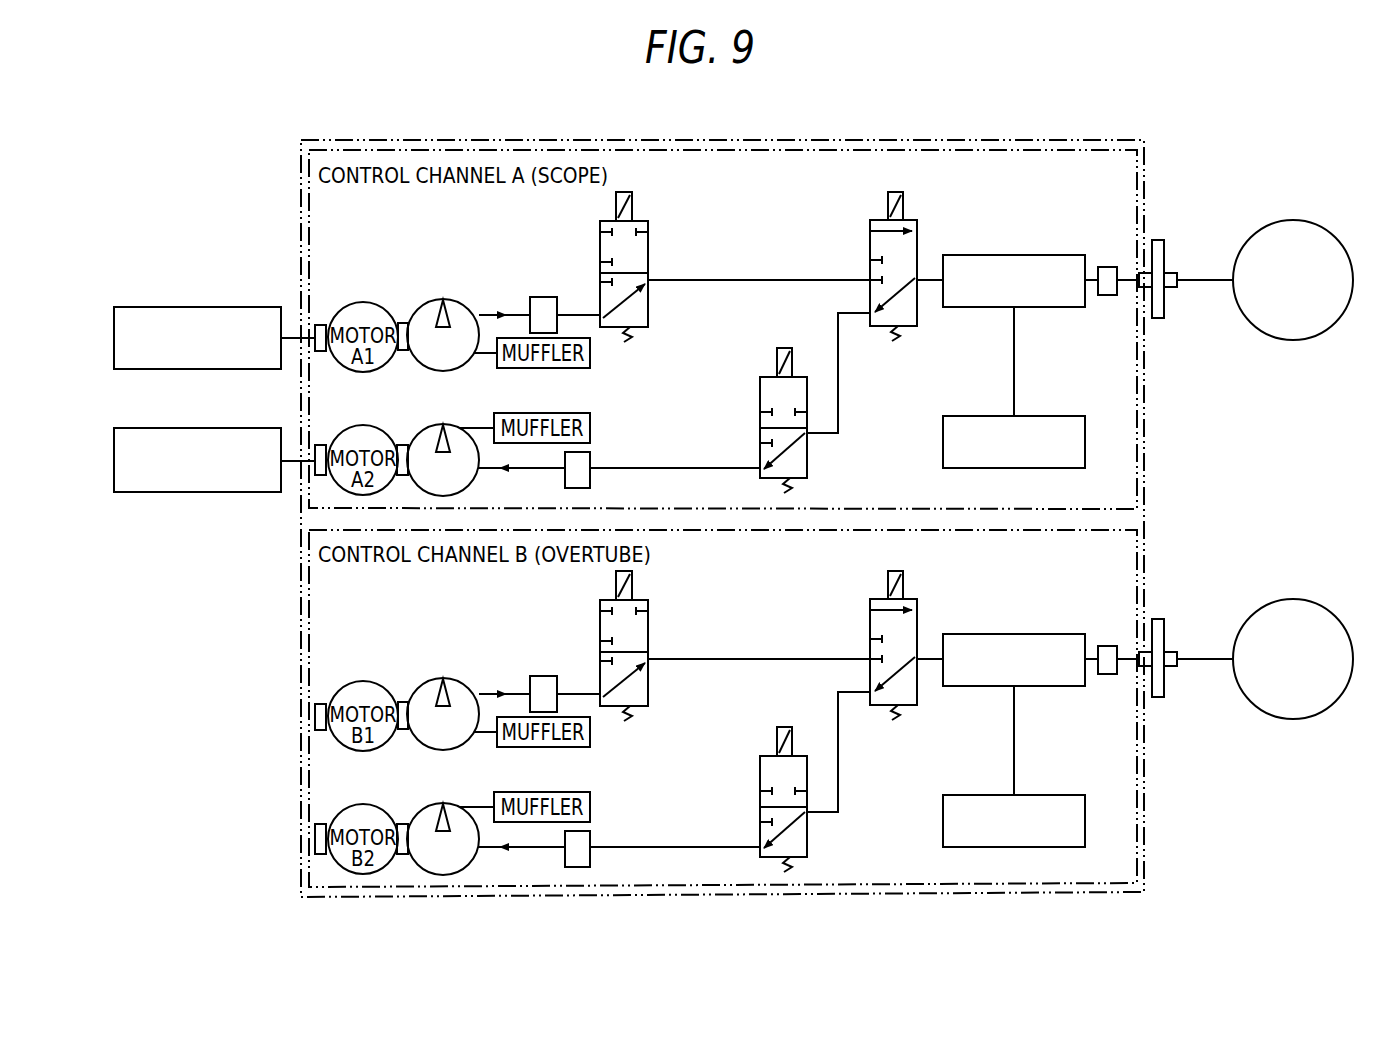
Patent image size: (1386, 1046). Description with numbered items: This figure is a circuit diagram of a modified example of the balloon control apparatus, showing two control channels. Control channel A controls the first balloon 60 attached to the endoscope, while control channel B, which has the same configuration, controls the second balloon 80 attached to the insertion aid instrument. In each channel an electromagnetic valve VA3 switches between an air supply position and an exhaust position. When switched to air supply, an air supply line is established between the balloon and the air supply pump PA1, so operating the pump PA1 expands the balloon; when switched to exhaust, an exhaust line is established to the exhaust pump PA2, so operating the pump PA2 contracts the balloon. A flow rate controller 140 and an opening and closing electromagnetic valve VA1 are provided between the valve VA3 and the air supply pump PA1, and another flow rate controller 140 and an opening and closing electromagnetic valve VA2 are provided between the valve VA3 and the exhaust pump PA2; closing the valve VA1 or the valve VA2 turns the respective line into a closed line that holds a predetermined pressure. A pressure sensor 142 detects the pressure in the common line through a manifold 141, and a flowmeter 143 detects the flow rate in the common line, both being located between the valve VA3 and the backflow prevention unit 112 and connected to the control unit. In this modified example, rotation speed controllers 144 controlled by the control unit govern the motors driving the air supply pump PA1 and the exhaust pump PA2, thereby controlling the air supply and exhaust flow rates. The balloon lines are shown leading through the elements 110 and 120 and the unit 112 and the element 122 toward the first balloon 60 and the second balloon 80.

The first balloon 60 is at (1291, 221).
The second balloon 80 is at (1293, 655).
The scope balloon air supply tube 110 is at (1203, 279).
The backflow prevention unit 112 is at (1158, 322).
The overtube balloon air supply tube 120 is at (1205, 637).
The overtube tube connector 122 is at (1172, 693).
The flow rate controller 140 is at (543, 297).
The manifold 141 is at (1036, 255).
The pressure sensor 142 is at (1048, 416).
The flowmeter 143 is at (1107, 267).
The rotation speed controller 144 is at (195, 307).
The air supply pump PA1 is at (428, 292).
The exhaust pump PA2 is at (411, 431).
The electromagnetic valve VA1 is at (648, 235).
The electromagnetic valve VA2 is at (807, 465).
The electromagnetic valve VA3 is at (917, 232).